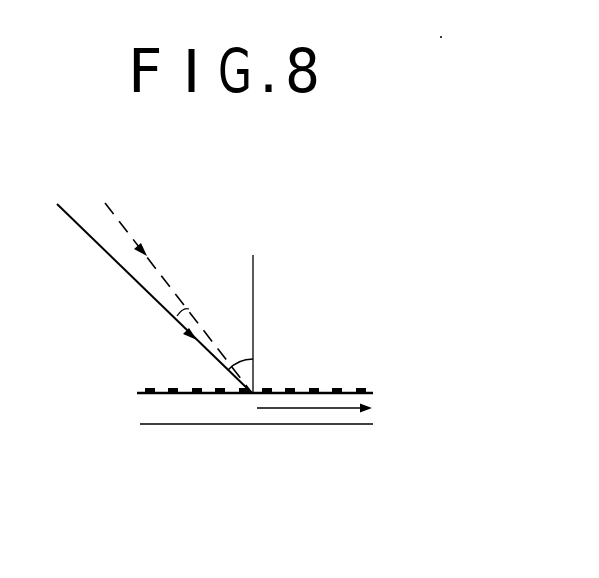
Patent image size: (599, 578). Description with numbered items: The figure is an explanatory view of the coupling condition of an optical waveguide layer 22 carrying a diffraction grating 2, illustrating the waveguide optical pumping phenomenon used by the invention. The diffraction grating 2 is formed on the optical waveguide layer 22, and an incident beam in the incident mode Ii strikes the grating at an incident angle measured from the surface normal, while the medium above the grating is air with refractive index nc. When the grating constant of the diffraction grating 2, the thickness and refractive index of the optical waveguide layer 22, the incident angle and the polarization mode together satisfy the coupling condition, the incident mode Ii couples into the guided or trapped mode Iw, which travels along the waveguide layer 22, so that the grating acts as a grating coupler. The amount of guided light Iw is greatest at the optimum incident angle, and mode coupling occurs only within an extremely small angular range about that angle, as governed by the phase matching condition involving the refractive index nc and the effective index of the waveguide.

The diffraction grating 2 is at (316, 388).
The optical waveguide layer 22 is at (148, 410).
The incident mode Ii is at (154, 298).
The refractive index of air nc is at (285, 324).
The guided mode Iw is at (337, 408).